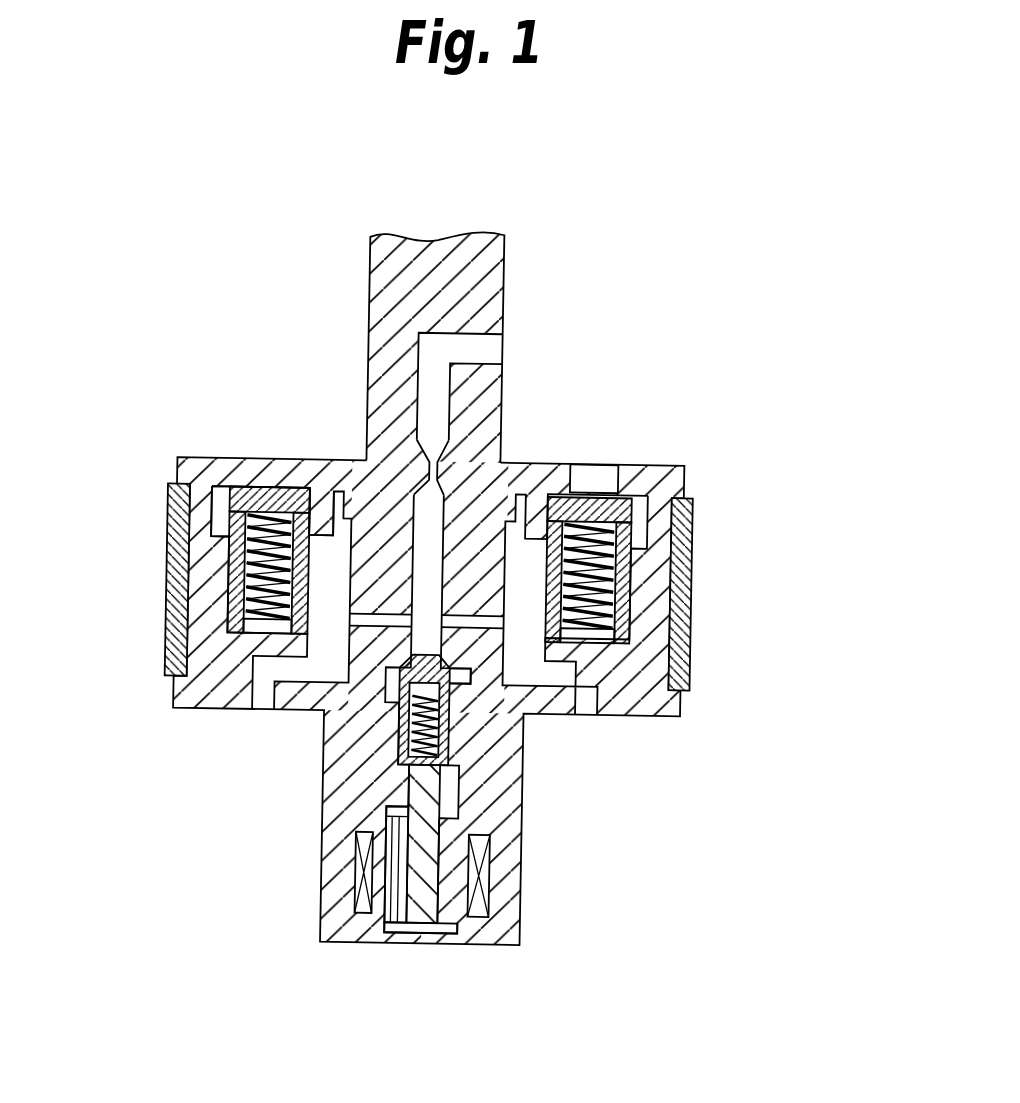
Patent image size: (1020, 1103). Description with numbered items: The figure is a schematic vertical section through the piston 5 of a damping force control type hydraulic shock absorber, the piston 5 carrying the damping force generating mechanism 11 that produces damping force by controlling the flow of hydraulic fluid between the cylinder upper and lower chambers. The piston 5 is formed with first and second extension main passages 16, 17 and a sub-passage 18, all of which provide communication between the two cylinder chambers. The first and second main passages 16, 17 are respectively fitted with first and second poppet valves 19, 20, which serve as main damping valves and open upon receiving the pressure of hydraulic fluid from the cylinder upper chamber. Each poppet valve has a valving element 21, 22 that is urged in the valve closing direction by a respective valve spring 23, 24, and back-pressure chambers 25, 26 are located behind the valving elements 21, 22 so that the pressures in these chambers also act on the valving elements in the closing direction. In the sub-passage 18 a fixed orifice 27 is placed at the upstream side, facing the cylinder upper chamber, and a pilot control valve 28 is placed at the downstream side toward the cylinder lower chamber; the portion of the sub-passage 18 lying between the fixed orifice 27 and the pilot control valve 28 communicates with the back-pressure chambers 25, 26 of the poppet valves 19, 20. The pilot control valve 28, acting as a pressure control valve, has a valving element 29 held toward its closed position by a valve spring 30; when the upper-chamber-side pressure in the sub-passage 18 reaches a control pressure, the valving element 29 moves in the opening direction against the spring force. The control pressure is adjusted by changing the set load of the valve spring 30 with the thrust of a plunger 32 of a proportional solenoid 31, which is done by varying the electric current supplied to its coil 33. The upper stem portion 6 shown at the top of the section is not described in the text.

The piston 5 is at (682, 702).
The valve stem / upper body portion 6 is at (447, 275).
The damping force generating mechanism 11 is at (503, 487).
The first extension main passage 16 is at (590, 480).
The second extension main passage 17 is at (270, 472).
The sub-passage 18 is at (487, 353).
The first poppet valve 19 is at (647, 514).
The second poppet valve 20 is at (227, 495).
The valving element 21 is at (690, 473).
The valving element 22 is at (300, 467).
The valve spring 23 is at (633, 572).
The valve spring 24 is at (240, 572).
The back-pressure chamber 25 is at (620, 625).
The back-pressure chamber 26 is at (233, 618).
The fixed orifice 27 is at (432, 465).
The pilot control valve 28 is at (476, 697).
The valving element 29 is at (405, 688).
The valve spring 30 is at (440, 752).
The proportional solenoid 31 is at (352, 870).
The plunger 32 is at (450, 937).
The coil 33 is at (489, 873).